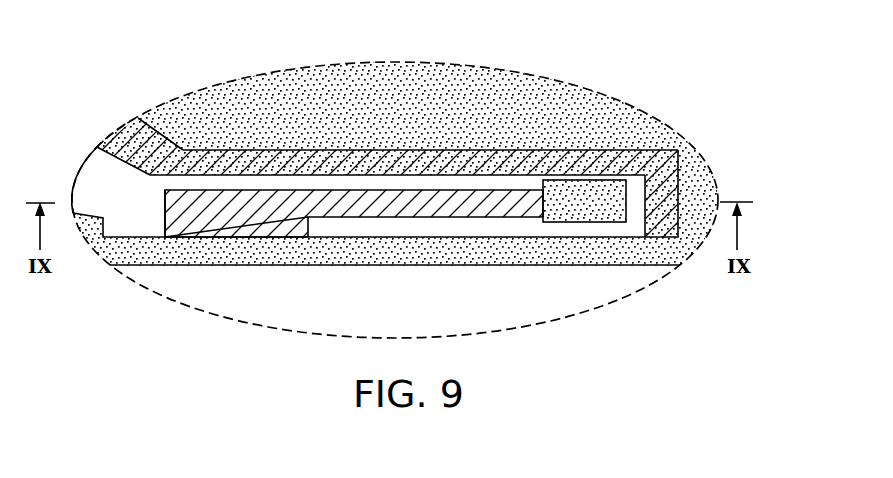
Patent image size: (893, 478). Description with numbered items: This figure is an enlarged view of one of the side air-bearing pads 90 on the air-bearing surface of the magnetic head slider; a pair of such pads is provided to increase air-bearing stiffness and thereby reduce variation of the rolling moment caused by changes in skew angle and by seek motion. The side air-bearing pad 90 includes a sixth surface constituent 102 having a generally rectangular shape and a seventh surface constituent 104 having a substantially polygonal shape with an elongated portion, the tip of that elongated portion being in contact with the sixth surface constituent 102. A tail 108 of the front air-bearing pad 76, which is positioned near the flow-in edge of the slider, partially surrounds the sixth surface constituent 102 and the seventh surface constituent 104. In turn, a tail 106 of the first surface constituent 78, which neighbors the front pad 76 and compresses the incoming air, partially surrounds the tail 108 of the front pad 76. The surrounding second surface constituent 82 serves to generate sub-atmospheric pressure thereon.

The front air-bearing pad 76 is at (87, 187).
The first surface constituent 78 is at (117, 138).
The second surface constituent 82 is at (397, 90).
The side air-bearing pad 90 is at (698, 152).
The sixth surface constituent 102 is at (577, 222).
The seventh surface constituent 104 is at (403, 202).
The tail of the first surface constituent 106 is at (662, 148).
The tail of the front pad 108 is at (247, 188).